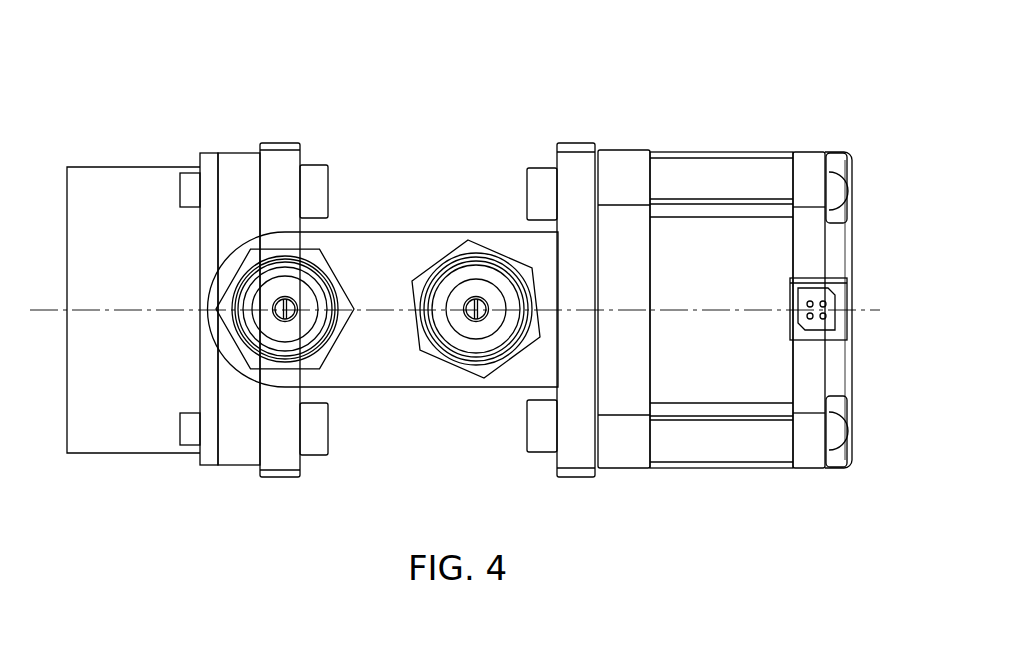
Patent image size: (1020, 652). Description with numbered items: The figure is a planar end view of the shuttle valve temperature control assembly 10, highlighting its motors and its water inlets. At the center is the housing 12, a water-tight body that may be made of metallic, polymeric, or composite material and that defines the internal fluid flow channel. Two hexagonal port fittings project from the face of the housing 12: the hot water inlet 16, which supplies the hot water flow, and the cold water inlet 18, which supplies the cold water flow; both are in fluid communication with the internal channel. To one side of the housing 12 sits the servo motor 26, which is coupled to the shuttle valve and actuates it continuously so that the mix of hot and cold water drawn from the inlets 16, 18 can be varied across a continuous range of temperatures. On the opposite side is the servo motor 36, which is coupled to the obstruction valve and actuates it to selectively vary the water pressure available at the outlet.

The shuttle valve temperature control assembly 10 is at (418, 183).
The housing 12 is at (390, 367).
The hot water inlet 16 is at (286, 265).
The cold water inlet 18 is at (478, 267).
The servo motor 26 is at (722, 182).
The servo motor 36 is at (132, 196).